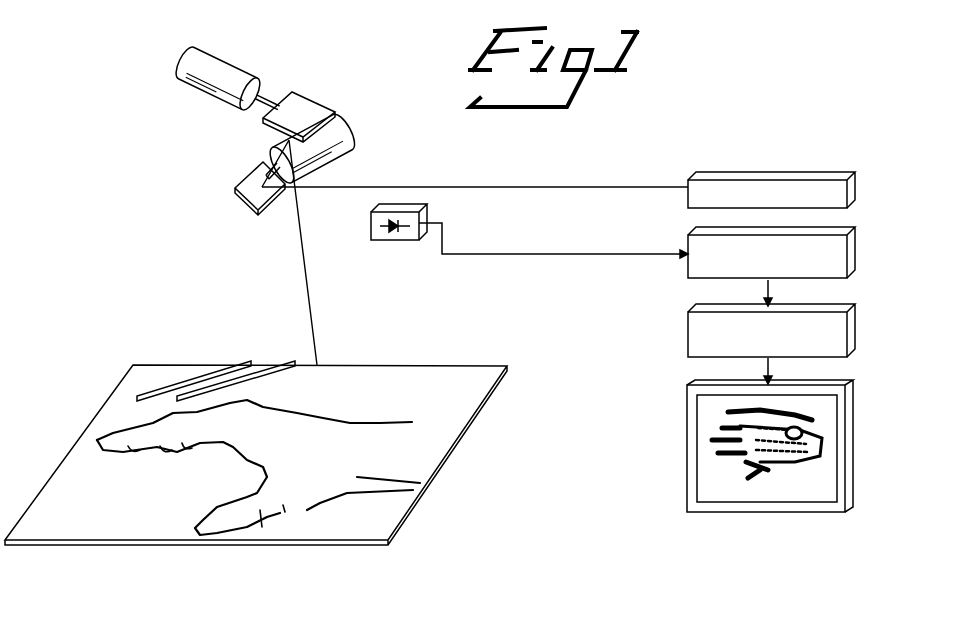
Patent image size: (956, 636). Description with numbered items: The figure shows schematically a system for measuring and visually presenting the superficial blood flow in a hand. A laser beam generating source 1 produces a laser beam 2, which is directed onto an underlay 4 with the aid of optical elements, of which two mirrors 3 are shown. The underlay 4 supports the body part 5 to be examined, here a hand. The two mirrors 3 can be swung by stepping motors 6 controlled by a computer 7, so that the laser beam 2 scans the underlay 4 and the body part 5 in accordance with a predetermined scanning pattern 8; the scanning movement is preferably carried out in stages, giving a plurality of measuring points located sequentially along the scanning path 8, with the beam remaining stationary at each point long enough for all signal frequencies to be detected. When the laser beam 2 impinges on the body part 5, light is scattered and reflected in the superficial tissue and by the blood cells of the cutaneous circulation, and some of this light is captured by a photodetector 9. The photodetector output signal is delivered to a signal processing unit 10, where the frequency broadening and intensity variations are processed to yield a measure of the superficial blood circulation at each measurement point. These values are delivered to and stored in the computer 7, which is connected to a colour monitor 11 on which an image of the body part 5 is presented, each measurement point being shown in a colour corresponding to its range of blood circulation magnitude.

The laser beam generating source 1 is at (734, 174).
The laser beam 2 is at (551, 186).
The mirrors 3 is at (302, 103).
The underlay 4 is at (102, 527).
The body part 5 is at (264, 533).
The stepping motors 6 is at (226, 64).
The computer 7 is at (693, 327).
The scanning pattern 8 is at (220, 377).
The photodetector 9 is at (384, 240).
The signal processing unit 10 is at (852, 262).
The colour monitor 11 is at (842, 435).